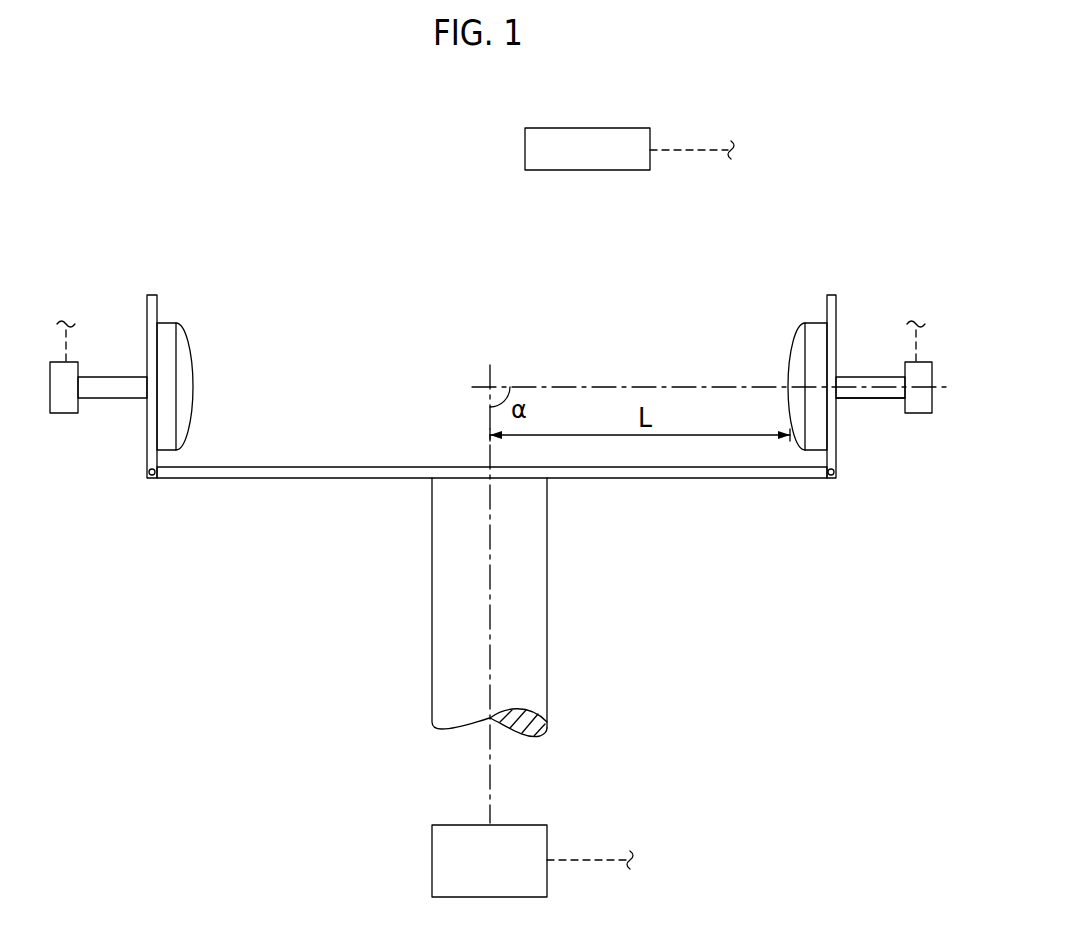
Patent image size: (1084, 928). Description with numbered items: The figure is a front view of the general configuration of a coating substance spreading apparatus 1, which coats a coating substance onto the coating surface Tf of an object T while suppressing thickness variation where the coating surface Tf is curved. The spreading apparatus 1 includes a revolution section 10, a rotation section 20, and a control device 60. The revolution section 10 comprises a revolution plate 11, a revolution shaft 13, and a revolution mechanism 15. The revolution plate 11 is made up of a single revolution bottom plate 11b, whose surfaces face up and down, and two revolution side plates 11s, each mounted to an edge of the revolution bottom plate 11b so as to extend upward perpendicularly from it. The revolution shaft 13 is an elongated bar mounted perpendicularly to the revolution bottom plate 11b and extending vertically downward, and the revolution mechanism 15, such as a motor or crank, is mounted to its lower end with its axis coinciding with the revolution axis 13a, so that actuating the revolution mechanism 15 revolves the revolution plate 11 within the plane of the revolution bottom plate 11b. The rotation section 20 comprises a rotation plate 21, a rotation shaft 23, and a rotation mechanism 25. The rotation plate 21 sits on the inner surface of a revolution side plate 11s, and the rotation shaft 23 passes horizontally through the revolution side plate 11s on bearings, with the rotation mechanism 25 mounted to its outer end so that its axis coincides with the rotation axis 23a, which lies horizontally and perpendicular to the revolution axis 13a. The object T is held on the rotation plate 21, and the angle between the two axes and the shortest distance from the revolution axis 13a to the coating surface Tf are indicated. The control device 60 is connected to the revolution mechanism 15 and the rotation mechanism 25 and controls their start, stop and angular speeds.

The coating substance spreading apparatus 1 is at (172, 158).
The revolution section 10 is at (184, 720).
The revolution plate 11 is at (466, 455).
The revolution side plate 11s is at (147, 455).
The revolution bottom plate 11b is at (195, 478).
The revolution shaft 13 is at (432, 682).
The revolution axis 13a is at (490, 758).
The revolution mechanism 15 is at (432, 860).
The rotation section 20 is at (869, 324).
The rotation plate 21 is at (805, 325).
The rotation shaft 23 is at (856, 377).
The rotation axis 23a is at (872, 399).
The rotation mechanism 25 is at (892, 360).
The control device 60 is at (597, 128).
The object to be coated T is at (790, 345).
The coating surface Tf is at (782, 360).